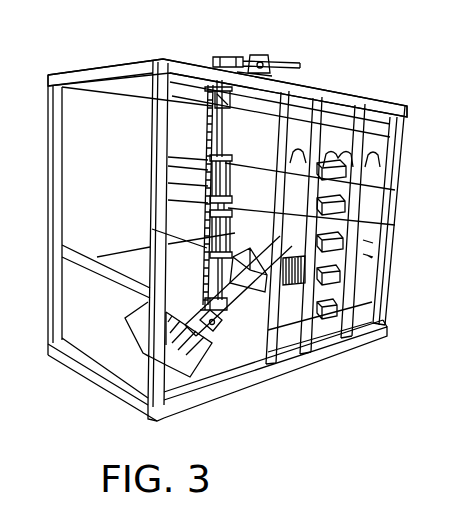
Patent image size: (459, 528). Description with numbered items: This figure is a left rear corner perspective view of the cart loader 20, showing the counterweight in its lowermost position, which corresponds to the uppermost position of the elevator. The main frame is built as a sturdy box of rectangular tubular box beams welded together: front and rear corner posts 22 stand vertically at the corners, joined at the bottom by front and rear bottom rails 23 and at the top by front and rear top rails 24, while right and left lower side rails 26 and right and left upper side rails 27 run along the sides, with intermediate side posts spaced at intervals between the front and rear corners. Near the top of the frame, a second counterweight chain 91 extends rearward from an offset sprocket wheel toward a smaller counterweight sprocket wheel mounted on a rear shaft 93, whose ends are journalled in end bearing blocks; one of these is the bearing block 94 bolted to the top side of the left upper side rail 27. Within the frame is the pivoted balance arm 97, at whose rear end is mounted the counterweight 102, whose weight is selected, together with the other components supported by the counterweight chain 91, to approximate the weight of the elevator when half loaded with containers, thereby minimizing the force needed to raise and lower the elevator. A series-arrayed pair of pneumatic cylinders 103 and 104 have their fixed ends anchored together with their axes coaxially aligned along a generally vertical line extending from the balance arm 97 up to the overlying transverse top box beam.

The loader 20 is at (104, 58).
The corner posts 22 is at (50, 175).
The bottom rails 23 is at (68, 358).
The top rails 24 is at (72, 77).
The lower side rails 26 is at (292, 362).
The upper side rails 27 is at (338, 98).
The counterweight chain 91 is at (208, 137).
The rear shaft 93 is at (238, 58).
The bearing block 94 is at (266, 62).
The balance arm 97 is at (214, 332).
The counterweight 102 is at (132, 318).
The upper pneumatic cylinder 103 is at (218, 185).
The lower pneumatic cylinder 104 is at (218, 232).